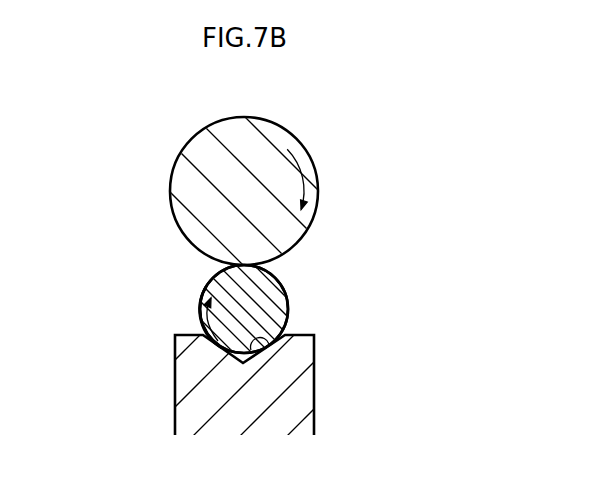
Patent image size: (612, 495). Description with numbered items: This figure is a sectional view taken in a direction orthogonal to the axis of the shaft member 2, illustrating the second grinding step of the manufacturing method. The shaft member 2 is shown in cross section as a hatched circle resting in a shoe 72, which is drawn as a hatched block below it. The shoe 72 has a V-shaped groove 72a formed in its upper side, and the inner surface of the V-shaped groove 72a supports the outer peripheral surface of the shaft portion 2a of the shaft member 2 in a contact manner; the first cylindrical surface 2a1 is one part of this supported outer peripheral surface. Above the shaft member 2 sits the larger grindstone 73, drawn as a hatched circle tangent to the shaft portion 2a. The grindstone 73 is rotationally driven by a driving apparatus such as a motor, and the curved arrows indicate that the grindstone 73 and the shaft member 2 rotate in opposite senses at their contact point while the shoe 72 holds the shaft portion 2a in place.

The grindstone 73 is at (188, 177).
The shaft member 2 is at (284, 281).
The shaft portion 2a is at (283, 309).
The first cylindrical surface 2a1 is at (204, 287).
The shoe 72 is at (188, 375).
The V-shaped groove 72a is at (276, 339).